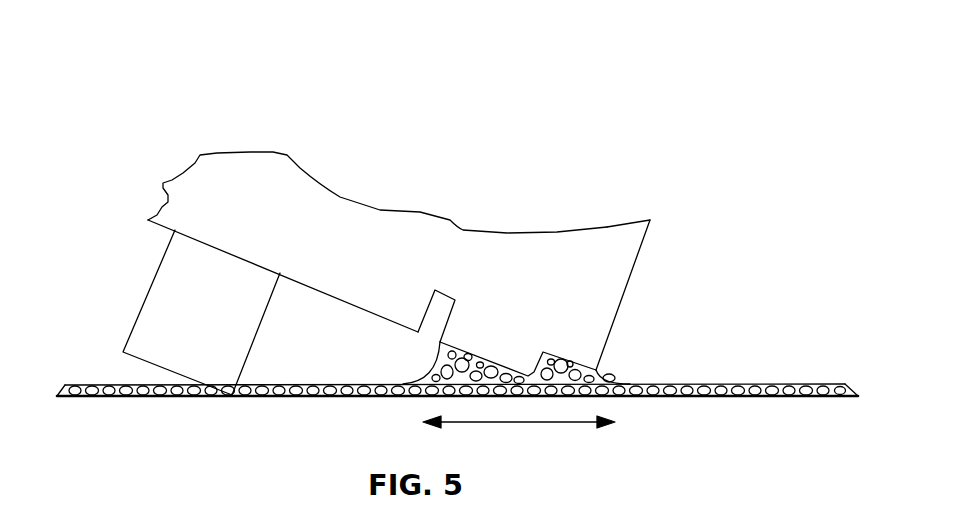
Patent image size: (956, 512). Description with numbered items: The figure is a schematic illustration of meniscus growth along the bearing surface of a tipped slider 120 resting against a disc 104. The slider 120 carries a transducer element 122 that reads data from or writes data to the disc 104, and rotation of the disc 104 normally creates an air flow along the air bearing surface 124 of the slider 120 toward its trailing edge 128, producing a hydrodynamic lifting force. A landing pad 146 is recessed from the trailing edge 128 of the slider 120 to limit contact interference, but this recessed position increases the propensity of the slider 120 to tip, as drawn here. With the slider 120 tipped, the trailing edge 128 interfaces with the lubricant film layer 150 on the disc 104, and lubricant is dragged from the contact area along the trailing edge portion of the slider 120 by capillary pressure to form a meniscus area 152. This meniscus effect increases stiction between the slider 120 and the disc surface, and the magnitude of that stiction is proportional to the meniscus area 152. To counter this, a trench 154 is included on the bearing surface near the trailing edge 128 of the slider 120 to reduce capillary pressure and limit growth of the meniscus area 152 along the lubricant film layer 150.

The slider 120 is at (475, 208).
The transducer element 122 is at (633, 232).
The trailing edge 128 is at (632, 275).
The air bearing surface 124 is at (335, 297).
The trenches 154 is at (440, 303).
The landing pad 146 is at (163, 300).
The meniscus area 152 is at (481, 367).
The lubricant film layer 150 is at (685, 384).
The disc 104 is at (748, 379).